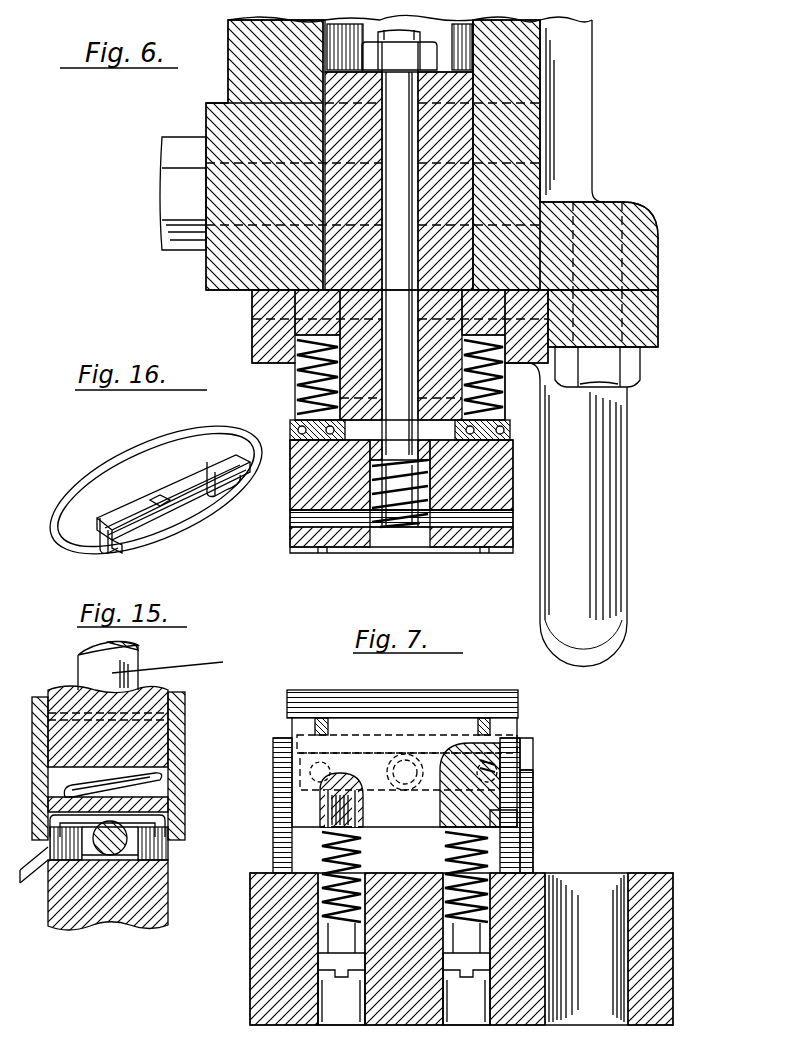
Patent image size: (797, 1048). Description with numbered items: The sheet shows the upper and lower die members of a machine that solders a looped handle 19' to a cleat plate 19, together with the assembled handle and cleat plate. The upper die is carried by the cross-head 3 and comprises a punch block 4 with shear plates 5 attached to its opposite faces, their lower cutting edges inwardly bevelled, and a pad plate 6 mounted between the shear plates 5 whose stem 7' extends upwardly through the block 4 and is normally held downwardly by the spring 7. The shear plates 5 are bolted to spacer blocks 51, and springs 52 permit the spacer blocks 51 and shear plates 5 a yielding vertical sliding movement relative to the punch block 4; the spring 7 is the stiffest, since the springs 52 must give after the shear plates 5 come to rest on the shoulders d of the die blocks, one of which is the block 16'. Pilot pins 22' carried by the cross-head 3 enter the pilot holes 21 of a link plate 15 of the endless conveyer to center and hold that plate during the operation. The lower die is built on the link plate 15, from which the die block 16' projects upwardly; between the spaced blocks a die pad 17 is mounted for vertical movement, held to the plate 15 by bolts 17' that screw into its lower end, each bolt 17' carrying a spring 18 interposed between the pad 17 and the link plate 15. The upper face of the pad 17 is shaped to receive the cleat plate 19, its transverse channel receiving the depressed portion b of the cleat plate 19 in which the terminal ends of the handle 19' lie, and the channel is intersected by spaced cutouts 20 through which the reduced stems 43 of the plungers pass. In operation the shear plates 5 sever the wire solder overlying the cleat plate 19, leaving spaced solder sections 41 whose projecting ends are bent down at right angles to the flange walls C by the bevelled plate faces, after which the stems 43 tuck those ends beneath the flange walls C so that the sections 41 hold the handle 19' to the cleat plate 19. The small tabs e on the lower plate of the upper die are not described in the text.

In FIG. 6, the cross-head 3 is at (612, 252).
In FIG. 6, the punch block 4 is at (573, 312).
In FIG. 6, the shear plates 5 is at (513, 517).
In FIG. 15, the shear plates 5 is at (183, 712).
In FIG. 6, the pad plate 6 is at (353, 546).
In FIG. 6, the spring 7 is at (400, 532).
In FIG. 15, the spring 7 is at (157, 708).
In FIG. 6, the stem 7' is at (401, 532).
In FIG. 6, the tab e is at (484, 553).
In FIG. 6, the spacer blocks 51 is at (510, 425).
In FIG. 6, the springs 52 is at (638, 383).
In FIG. 6, the pilot pins 22' is at (633, 519).
In FIG. 16, the cleat plate 19 is at (173, 525).
In FIG. 15, the cleat plate 19 is at (170, 836).
In FIG. 16, the handle 19' is at (155, 490).
In FIG. 15, the handle 19' is at (135, 892).
In FIG. 16, the severed sections of wire solder 41 is at (243, 487).
In FIG. 15, the severed sections of wire solder 41 is at (168, 805).
In FIG. 16, the flange walls C is at (193, 517).
In FIG. 15, the flange walls C is at (133, 818).
In FIG. 16, the depressed portion b is at (122, 553).
In FIG. 15, the cutouts 20 is at (147, 850).
In FIG. 15, the die pad 17 is at (146, 895).
In FIG. 7, the die pad 17 is at (470, 753).
In FIG. 7, the bolts 17' is at (441, 924).
In FIG. 7, the spring 18 is at (500, 832).
In FIG. 7, the die block 16' is at (477, 772).
In FIG. 7, the reduced stem 43 is at (523, 758).
In FIG. 7, the shoulders d is at (539, 775).
In FIG. 7, the pilot holes 21 is at (580, 880).
In FIG. 7, the link plates 15 is at (282, 995).